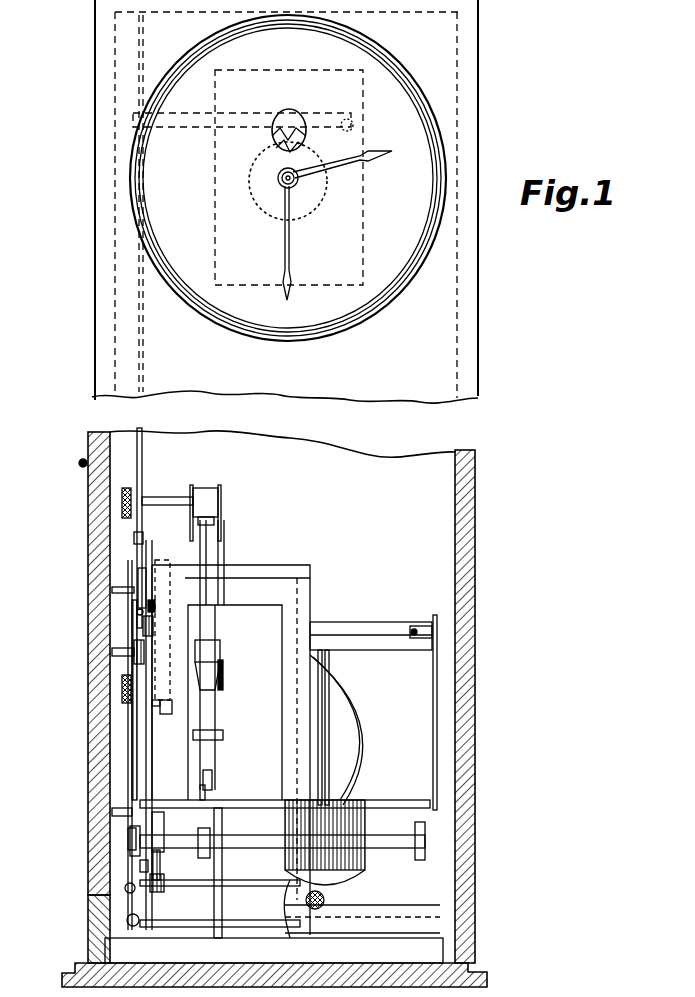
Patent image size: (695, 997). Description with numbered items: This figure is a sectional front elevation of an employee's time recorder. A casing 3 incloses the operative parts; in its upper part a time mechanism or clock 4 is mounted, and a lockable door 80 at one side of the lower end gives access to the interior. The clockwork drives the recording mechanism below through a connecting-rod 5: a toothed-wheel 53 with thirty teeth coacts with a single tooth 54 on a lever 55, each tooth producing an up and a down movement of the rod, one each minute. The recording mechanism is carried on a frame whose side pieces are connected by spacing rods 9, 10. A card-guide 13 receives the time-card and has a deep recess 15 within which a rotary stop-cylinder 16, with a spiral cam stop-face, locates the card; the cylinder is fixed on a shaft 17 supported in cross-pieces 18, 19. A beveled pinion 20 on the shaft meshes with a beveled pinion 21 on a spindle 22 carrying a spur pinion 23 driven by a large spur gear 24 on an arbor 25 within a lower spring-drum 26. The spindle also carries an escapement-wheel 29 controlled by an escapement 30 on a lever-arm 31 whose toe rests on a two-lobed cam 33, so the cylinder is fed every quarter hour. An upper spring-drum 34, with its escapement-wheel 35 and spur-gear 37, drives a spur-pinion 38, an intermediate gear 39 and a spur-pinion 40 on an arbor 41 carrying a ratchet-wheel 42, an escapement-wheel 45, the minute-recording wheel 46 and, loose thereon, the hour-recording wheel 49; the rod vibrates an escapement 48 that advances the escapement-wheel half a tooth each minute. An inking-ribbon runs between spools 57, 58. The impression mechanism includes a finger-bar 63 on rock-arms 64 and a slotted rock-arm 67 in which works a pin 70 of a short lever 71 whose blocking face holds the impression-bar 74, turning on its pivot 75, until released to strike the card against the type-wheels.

The casing 3 is at (466, 662).
The time mechanism 4 is at (288, 178).
The connecting-rod 5 is at (143, 464).
The spacing rod 9 is at (424, 640).
The spacing rod 10 is at (198, 920).
The card-guide 13 is at (312, 615).
The recess 15 is at (235, 702).
The stop-cylinder 16 is at (377, 712).
The shaft 17 is at (318, 692).
The cross-piece 18 is at (385, 912).
The cross-piece 19 is at (372, 622).
The beveled pinion 20 is at (325, 898).
The beveled pinion 21 is at (298, 921).
The spindle 22 is at (240, 892).
The spur pinion 23 is at (160, 892).
The spur gear 24 is at (165, 860).
The arbor 25 is at (112, 812).
The spring-drum 26 is at (150, 862).
The escapement-wheel 29 is at (120, 904).
The escapement 30 is at (130, 840).
The lever-arm 31 is at (128, 762).
The cam 33 is at (134, 658).
The spring-drum 34 is at (178, 708).
The escapement-wheel 35 is at (122, 682).
The spur-gear 37 is at (158, 704).
The spur-pinion 38 is at (160, 592).
The intermediate gear 39 is at (152, 565).
The spur-pinion 40 is at (143, 620).
The arbor 41 is at (118, 590).
The ratchet-wheel 42 is at (138, 610).
The escapement-wheel 45 is at (138, 580).
The minute-recording wheel 46 is at (203, 545).
The escapement 48 is at (134, 538).
The hour-recording wheel 49 is at (212, 550).
The toothed-wheel 53 is at (282, 144).
The tooth 54 is at (282, 134).
The lever 55 is at (288, 120).
The spool 57 is at (205, 488).
The spool 58 is at (222, 680).
The finger-bar 63 is at (375, 808).
The rock-arm 64 is at (130, 830).
The rock-arm 67 is at (210, 840).
The pin 70 is at (210, 800).
The short lever 71 is at (212, 782).
The impression-bar 74 is at (206, 716).
The pivot 75 is at (240, 735).
The door 80 is at (104, 560).